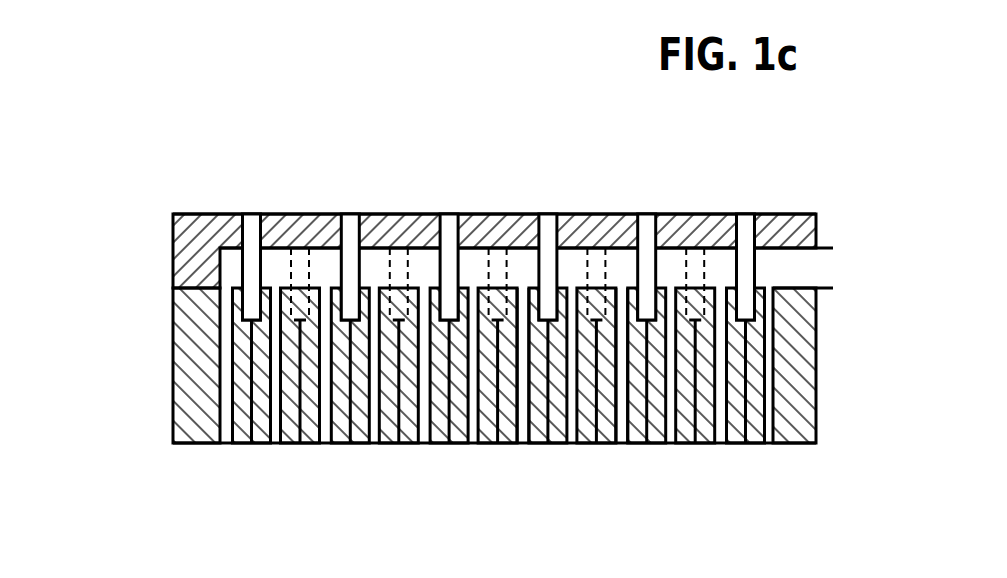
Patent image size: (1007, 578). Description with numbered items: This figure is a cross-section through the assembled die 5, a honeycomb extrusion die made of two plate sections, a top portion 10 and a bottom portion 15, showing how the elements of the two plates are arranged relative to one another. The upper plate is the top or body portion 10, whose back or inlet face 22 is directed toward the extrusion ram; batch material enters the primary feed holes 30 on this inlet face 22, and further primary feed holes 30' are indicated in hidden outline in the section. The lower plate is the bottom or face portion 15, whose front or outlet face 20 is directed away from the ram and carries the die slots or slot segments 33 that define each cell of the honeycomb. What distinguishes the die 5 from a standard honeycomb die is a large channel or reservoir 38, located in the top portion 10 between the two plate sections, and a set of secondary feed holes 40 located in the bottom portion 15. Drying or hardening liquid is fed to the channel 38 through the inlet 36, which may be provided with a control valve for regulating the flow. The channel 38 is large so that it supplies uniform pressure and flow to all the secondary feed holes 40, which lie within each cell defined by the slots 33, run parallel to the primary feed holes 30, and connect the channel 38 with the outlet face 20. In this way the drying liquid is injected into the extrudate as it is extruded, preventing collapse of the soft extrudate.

The die 5 is at (211, 96).
The top portion 10 is at (136, 242).
The bottom portion 15 is at (138, 374).
The outlet face 20 is at (423, 469).
The inlet face 22 is at (423, 186).
The feed holes 30 is at (499, 241).
The feed holes 30' is at (497, 242).
The die slots 33 is at (690, 443).
The inlet 36 is at (833, 260).
The channel 38 is at (715, 257).
The secondary feed holes 40 is at (523, 443).